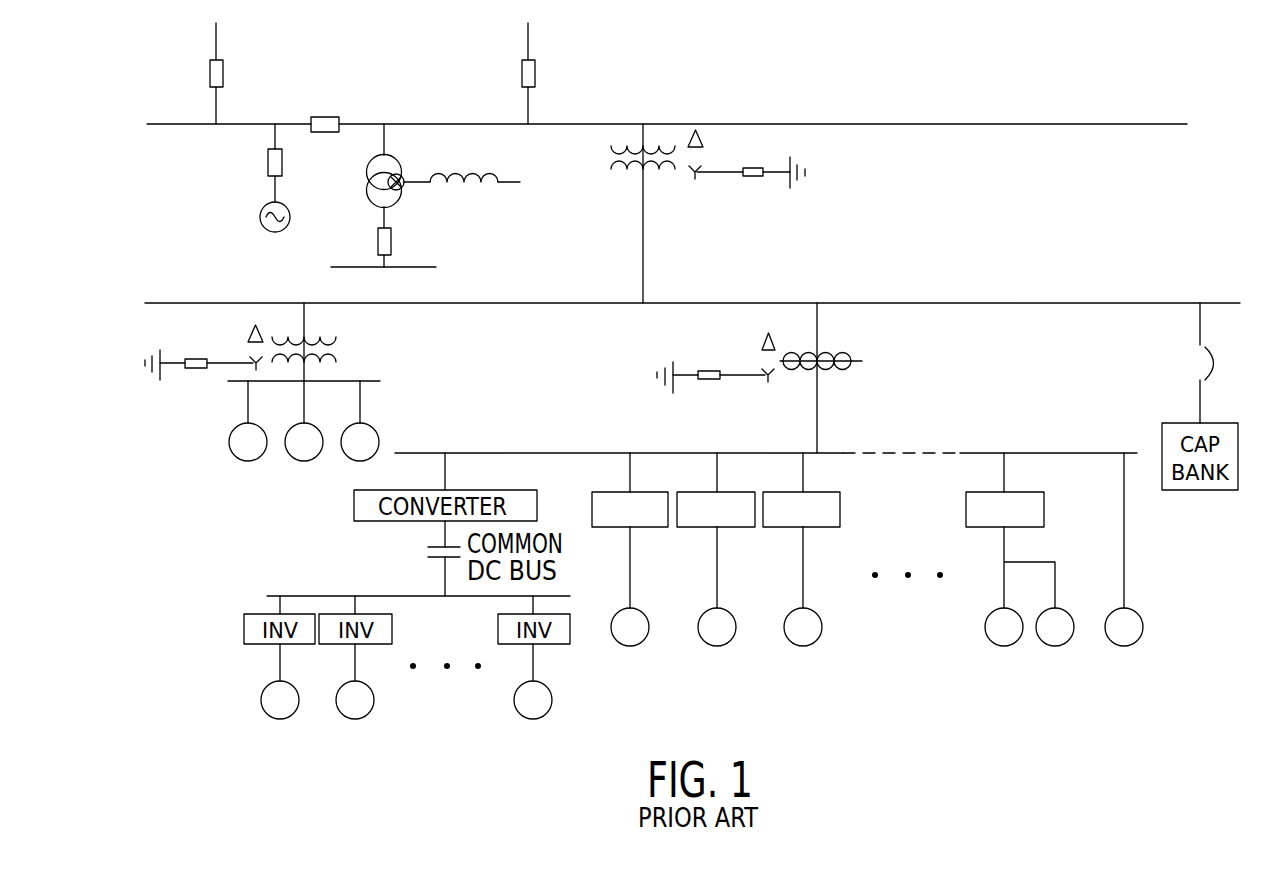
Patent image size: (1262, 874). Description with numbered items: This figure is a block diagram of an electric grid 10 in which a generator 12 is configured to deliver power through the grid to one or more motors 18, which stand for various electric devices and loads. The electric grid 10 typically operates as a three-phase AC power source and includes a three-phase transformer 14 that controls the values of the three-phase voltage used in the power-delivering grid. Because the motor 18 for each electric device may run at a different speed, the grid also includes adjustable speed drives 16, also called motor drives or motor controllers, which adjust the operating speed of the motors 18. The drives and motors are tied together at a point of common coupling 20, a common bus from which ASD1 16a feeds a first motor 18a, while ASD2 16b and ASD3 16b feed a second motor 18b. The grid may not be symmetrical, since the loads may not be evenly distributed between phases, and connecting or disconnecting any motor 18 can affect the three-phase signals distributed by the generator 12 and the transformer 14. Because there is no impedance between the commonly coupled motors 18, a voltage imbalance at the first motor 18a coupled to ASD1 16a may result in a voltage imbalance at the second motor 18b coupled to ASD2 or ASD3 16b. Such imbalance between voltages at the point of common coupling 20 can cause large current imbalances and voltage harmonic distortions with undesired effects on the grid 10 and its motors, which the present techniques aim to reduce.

The electric grid 10 is at (1083, 67).
The generator 12 is at (274, 233).
The three-phase transformer 14 is at (397, 190).
The adjustable speed drives 16 is at (818, 528).
The ASD1 16a is at (647, 527).
The ASD2 or ASD3 16b is at (733, 527).
The motors 18 is at (304, 461).
The first motor 18a is at (630, 646).
The second motor 18b is at (718, 646).
The point of common coupling 20 is at (673, 453).